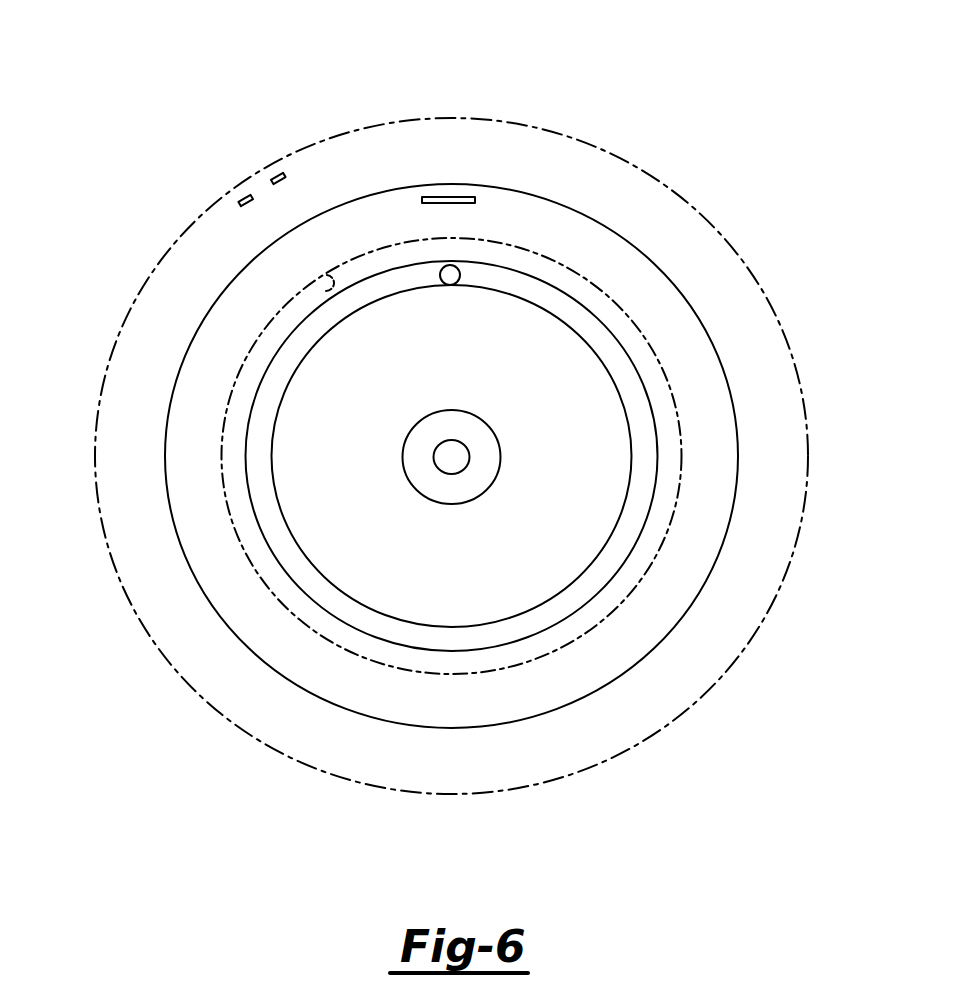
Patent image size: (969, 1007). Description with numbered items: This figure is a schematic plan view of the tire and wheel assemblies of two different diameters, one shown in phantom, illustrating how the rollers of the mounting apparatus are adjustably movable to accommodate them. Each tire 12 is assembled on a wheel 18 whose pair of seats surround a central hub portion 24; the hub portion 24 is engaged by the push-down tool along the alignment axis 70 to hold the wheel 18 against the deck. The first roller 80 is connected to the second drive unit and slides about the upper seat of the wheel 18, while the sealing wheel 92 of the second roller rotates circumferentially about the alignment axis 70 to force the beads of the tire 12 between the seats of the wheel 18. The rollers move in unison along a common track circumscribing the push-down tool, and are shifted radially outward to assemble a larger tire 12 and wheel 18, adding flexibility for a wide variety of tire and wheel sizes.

The tire 12 is at (705, 213).
The wheel 18 is at (240, 547).
The hub portion 24 is at (420, 450).
The alignment axis 70 is at (452, 457).
The first roller 80 is at (255, 283).
The sealing wheel 92 is at (452, 197).